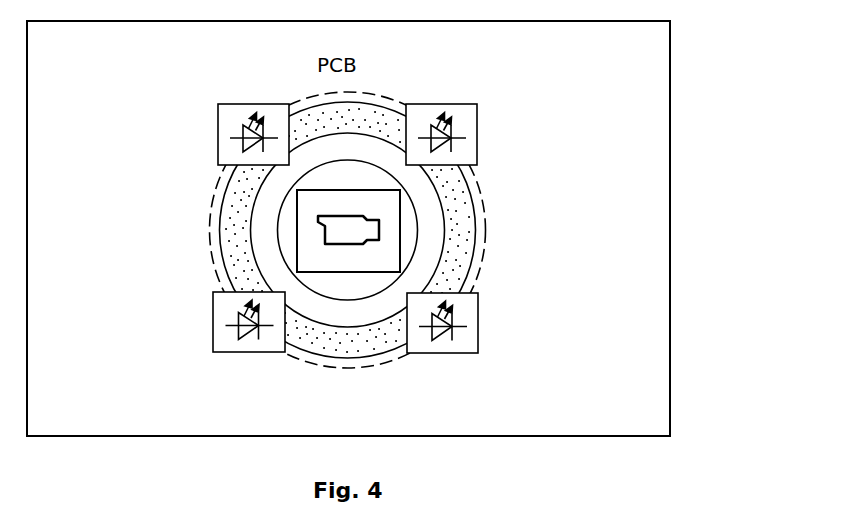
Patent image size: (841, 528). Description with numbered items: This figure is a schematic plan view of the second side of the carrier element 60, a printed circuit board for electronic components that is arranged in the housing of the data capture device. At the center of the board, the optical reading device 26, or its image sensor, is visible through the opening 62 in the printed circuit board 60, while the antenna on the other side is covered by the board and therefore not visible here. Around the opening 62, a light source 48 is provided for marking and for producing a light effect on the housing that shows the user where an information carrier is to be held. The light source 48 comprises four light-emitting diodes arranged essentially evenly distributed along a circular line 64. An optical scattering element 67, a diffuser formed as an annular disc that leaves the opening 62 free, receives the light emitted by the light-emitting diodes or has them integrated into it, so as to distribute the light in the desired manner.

The carrier element 60 is at (670, 145).
The circular line 64 is at (483, 217).
The optical scattering element 67 is at (460, 258).
The opening 62 is at (338, 303).
The optical reading device 26 is at (297, 213).
The light source 48 is at (218, 132).